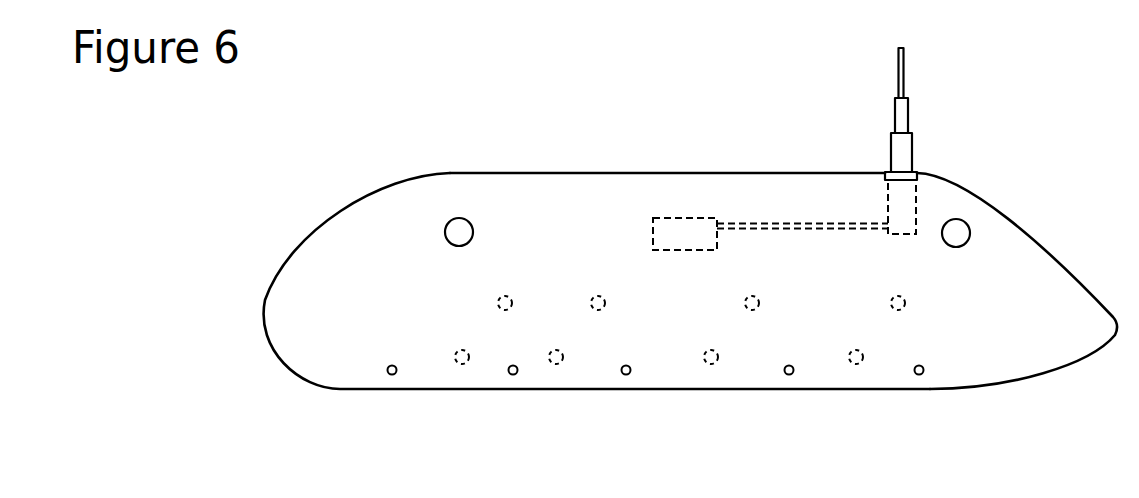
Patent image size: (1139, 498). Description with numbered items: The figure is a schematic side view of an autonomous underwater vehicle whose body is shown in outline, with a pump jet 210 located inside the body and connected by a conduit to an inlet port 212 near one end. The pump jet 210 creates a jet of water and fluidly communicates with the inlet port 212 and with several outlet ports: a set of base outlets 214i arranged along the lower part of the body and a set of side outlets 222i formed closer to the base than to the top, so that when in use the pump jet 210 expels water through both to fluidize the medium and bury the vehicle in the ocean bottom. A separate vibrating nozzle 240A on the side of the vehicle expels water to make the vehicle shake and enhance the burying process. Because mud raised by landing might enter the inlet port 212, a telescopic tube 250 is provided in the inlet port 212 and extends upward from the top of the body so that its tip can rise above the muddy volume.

The pump jet 210 is at (667, 217).
The inlet port 212 is at (915, 213).
The base outlets 214i is at (505, 311).
The side outlets 222i is at (391, 376).
The vibrating nozzle 240A is at (459, 218).
The telescopic tube 250 is at (912, 147).